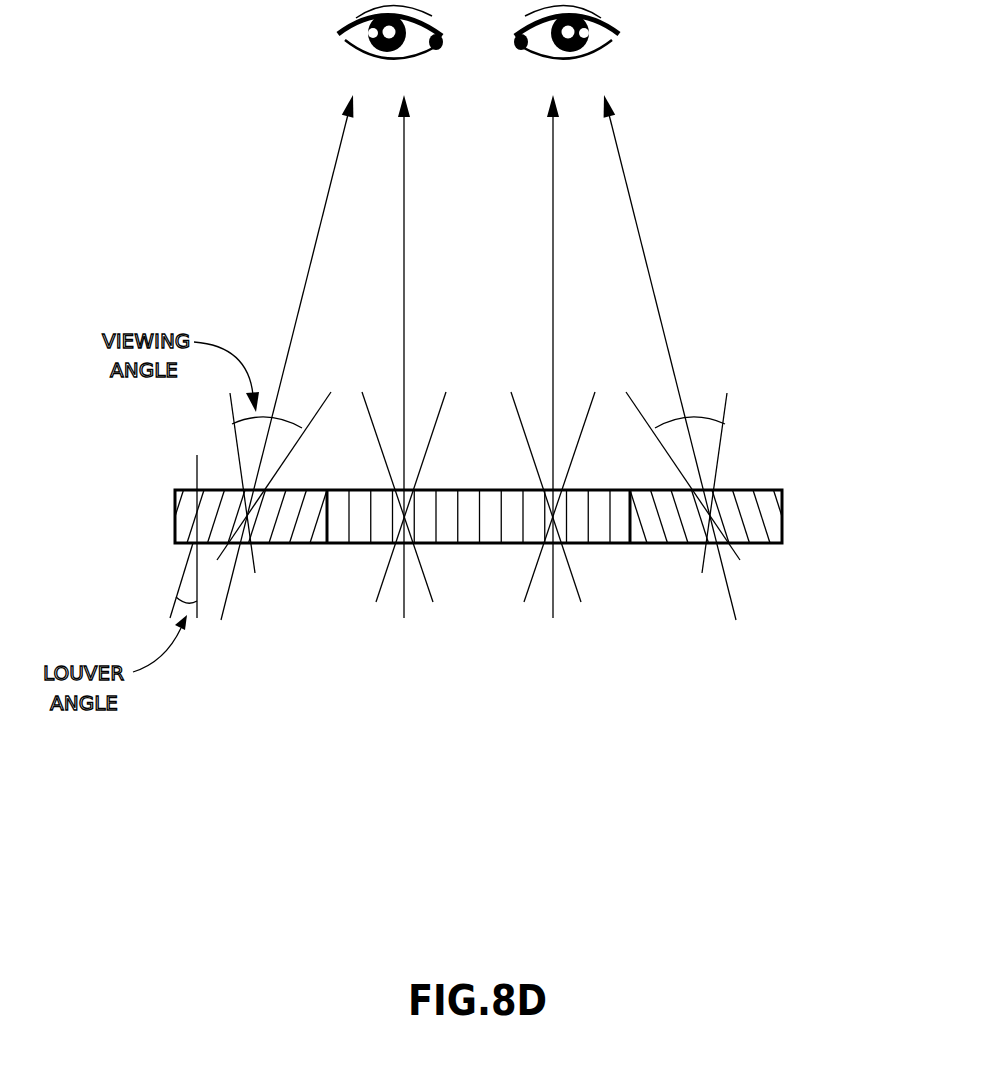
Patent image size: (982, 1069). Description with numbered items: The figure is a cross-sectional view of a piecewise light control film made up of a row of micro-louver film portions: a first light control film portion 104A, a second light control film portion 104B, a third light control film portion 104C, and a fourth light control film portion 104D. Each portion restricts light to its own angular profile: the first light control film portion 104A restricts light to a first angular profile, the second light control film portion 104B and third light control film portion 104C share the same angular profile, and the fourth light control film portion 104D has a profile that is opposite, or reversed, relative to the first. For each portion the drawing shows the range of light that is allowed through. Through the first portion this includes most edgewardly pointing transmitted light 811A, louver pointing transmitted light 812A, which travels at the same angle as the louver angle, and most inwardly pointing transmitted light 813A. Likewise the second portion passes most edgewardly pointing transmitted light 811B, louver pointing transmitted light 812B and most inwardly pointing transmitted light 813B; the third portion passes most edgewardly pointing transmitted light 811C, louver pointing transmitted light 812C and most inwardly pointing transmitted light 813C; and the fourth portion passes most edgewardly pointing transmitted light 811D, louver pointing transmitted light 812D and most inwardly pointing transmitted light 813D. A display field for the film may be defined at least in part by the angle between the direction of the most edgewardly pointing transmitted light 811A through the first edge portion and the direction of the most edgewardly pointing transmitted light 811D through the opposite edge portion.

The first light control film portion 104A is at (267, 543).
The second light control film portion 104B is at (435, 543).
The third light control film portion 104C is at (595, 543).
The fourth light control film portion 104D is at (757, 543).
The most edgewardly pointing transmitted light 811A is at (233, 440).
The most edgewardly pointing transmitted light 811B is at (370, 418).
The most edgewardly pointing transmitted light 811C is at (593, 410).
The most edgewardly pointing transmitted light 811D is at (724, 440).
The louver pointing transmitted light 812A is at (316, 242).
The louver pointing transmitted light 812B is at (403, 295).
The louver pointing transmitted light 812C is at (554, 295).
The louver pointing transmitted light 812D is at (641, 242).
The most inwardly pointing transmitted light 813A is at (330, 393).
The most inwardly pointing transmitted light 813B is at (446, 393).
The most inwardly pointing transmitted light 813C is at (521, 418).
The most inwardly pointing transmitted light 813D is at (647, 421).